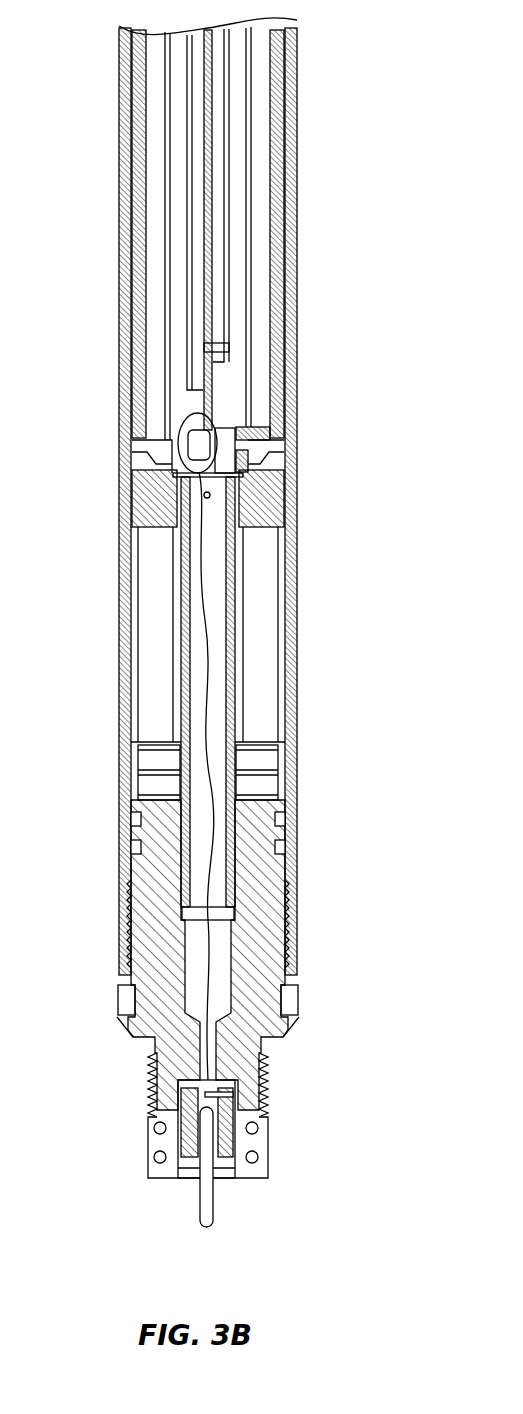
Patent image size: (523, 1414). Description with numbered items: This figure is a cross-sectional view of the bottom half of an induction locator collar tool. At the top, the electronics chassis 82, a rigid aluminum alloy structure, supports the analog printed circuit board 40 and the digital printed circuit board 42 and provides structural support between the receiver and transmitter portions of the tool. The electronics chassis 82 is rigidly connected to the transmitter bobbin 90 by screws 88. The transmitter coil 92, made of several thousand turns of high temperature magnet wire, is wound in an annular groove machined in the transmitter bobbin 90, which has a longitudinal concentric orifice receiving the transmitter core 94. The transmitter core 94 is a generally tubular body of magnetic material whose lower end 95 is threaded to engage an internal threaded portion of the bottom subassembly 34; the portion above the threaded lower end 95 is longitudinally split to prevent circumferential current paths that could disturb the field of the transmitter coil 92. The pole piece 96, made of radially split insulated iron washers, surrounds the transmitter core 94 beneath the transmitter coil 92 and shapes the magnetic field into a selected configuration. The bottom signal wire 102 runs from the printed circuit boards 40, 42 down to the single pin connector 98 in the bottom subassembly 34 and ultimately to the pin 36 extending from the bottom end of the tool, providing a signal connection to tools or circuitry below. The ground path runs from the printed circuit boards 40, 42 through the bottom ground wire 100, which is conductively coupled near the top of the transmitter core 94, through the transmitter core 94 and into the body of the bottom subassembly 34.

The bottom subassembly 34 is at (288, 1015).
The pin 36 is at (215, 1208).
The analog printed circuit board 40 is at (230, 125).
The digital printed circuit board 42 is at (185, 135).
The electronics chassis 82 is at (295, 228).
The screws 88 is at (278, 463).
The transmitter bobbin 90 is at (270, 500).
The transmitter coil 92 is at (270, 685).
The transmitter core 94 is at (290, 517).
The threaded lower end of transmitter core 95 is at (233, 875).
The pole piece 96 is at (243, 780).
The single pin connector 98 is at (233, 1120).
The bottom ground wire 100 is at (217, 427).
The bottom signal wire 102 is at (203, 630).